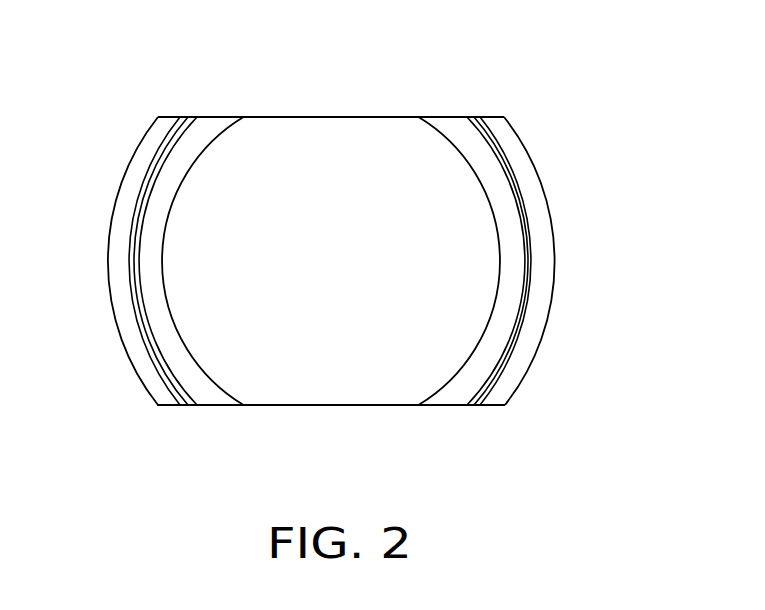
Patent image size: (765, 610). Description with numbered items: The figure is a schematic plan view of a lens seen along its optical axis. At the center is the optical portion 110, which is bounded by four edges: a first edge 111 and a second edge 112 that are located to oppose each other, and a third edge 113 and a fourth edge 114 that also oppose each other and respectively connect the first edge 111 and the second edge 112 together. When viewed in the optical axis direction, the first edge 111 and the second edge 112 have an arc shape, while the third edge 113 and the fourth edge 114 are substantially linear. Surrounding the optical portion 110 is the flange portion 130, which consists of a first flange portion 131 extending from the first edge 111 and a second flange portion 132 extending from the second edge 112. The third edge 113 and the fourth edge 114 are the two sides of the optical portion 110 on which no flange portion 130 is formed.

The optical portion 110 is at (369, 390).
The first edge 111 is at (157, 316).
The second edge 112 is at (502, 321).
The third edge 113 is at (291, 418).
The fourth edge 114 is at (332, 104).
The flange portion 130 is at (409, 261).
The first flange portion 131 is at (185, 148).
The second flange portion 132 is at (512, 225).